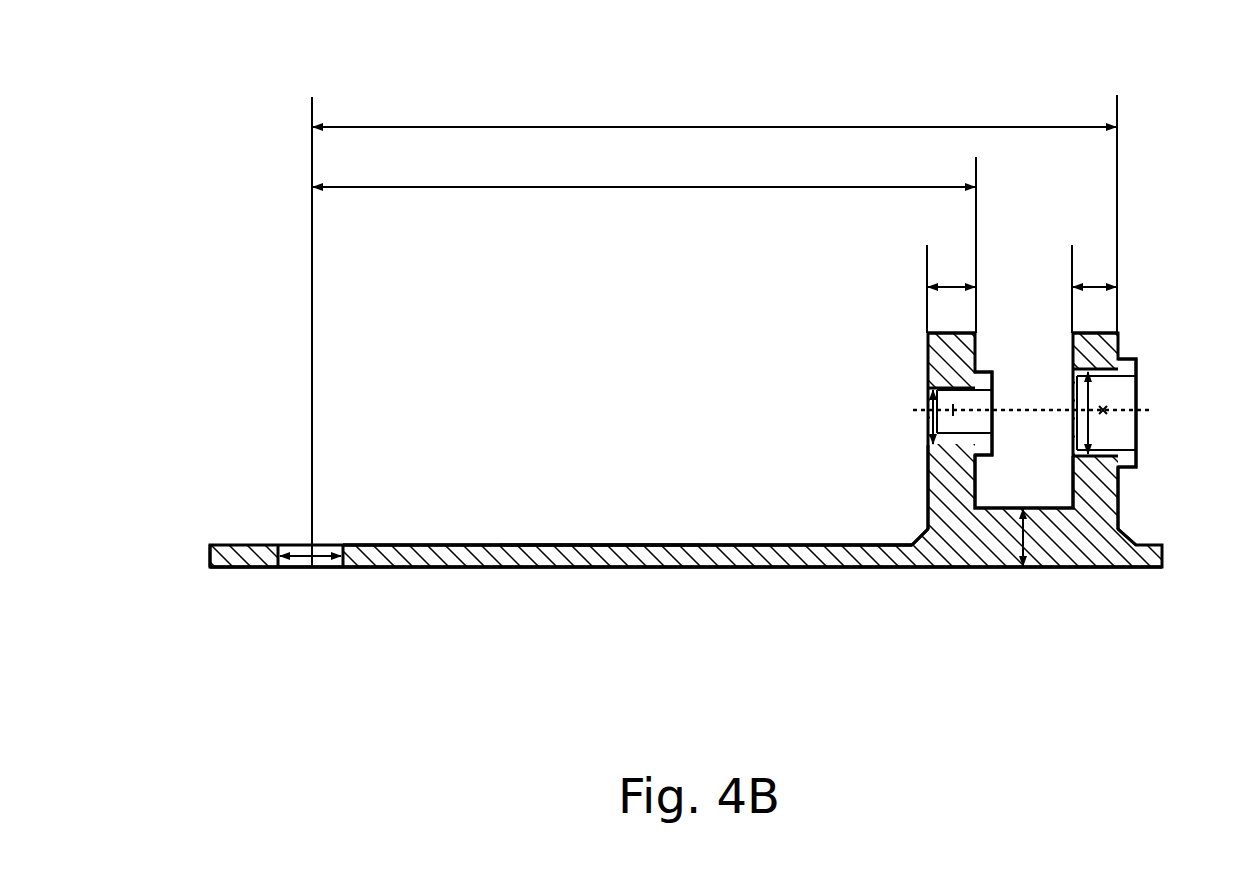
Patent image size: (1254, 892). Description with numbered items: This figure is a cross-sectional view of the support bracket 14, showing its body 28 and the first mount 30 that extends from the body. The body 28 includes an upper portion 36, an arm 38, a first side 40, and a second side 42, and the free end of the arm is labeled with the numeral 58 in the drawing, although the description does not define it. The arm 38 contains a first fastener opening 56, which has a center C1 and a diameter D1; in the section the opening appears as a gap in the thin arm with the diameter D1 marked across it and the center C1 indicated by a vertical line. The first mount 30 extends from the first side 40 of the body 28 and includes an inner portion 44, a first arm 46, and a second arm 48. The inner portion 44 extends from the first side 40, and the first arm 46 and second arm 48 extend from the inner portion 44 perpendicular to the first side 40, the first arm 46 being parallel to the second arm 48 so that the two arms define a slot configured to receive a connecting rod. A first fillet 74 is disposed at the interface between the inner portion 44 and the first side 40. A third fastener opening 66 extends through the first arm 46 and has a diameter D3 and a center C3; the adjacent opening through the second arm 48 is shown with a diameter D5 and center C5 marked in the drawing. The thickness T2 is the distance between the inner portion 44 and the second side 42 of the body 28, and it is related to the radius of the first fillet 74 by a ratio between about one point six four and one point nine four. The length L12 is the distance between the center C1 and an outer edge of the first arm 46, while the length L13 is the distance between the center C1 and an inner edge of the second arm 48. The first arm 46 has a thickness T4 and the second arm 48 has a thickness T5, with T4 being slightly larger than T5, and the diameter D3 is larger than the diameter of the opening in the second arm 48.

The support bracket 14 is at (742, 592).
The body 28 is at (683, 560).
The arm 38 is at (417, 555).
The first side 40 is at (610, 543).
The second side 42 is at (512, 570).
The plate end 58 is at (208, 556).
The first fastener opening 56 is at (298, 545).
The center C1 is at (309, 543).
The diameter D1 is at (300, 568).
The length L12 is at (773, 125).
The length L13 is at (662, 187).
The thickness T5 is at (952, 286).
The thickness T4 is at (1092, 285).
The thickness T2 is at (1025, 540).
The first mount 30 is at (1022, 322).
The second arm 48 is at (945, 350).
The third fastener opening 66 is at (1100, 365).
The first arm 46 is at (1093, 490).
The inner portion 44 is at (1048, 507).
The upper portion 36 is at (927, 548).
The first fillet 74 is at (922, 537).
The diameter D5 is at (930, 405).
The diameter D3 is at (1090, 422).
The center C5 is at (953, 410).
The center C3 is at (1103, 410).